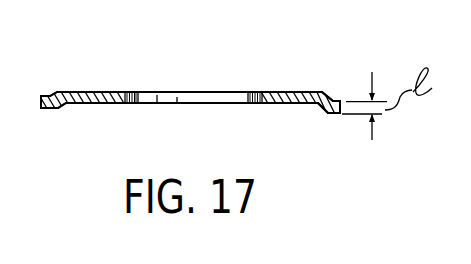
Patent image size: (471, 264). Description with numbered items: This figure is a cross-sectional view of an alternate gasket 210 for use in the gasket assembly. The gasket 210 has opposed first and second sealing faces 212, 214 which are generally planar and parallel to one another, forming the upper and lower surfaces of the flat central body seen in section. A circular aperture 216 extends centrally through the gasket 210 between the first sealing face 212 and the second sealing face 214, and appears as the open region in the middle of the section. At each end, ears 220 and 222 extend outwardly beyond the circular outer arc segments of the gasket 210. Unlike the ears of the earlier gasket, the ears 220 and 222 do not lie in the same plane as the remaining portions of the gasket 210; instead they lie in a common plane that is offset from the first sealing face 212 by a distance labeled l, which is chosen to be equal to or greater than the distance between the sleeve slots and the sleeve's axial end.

The gasket 210 is at (281, 71).
The first sealing face 212 is at (97, 92).
The second sealing face 214 is at (77, 105).
The circular aperture 216 is at (249, 103).
The ear 220 is at (49, 99).
The ear 222 is at (333, 101).